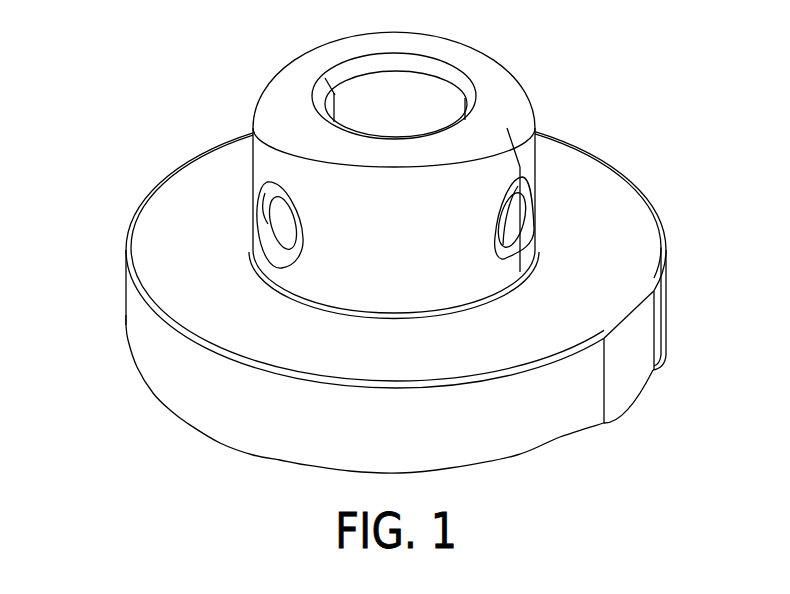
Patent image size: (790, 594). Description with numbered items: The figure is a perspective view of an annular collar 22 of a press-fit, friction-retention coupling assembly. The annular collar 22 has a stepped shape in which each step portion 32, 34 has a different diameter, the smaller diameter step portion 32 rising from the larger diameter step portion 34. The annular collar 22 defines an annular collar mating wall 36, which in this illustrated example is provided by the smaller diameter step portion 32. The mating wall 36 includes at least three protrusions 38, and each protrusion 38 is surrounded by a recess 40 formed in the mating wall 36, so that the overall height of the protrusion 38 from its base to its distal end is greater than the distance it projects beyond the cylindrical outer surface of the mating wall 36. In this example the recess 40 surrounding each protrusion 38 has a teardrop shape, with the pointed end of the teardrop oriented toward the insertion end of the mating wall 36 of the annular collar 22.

The annular collar 22 is at (372, 241).
The smaller diameter step portion 32 is at (397, 196).
The step portion 34 is at (126, 311).
The annular collar mating wall 36 is at (405, 290).
The protrusion 38 is at (397, 212).
The recess 40 is at (273, 242).